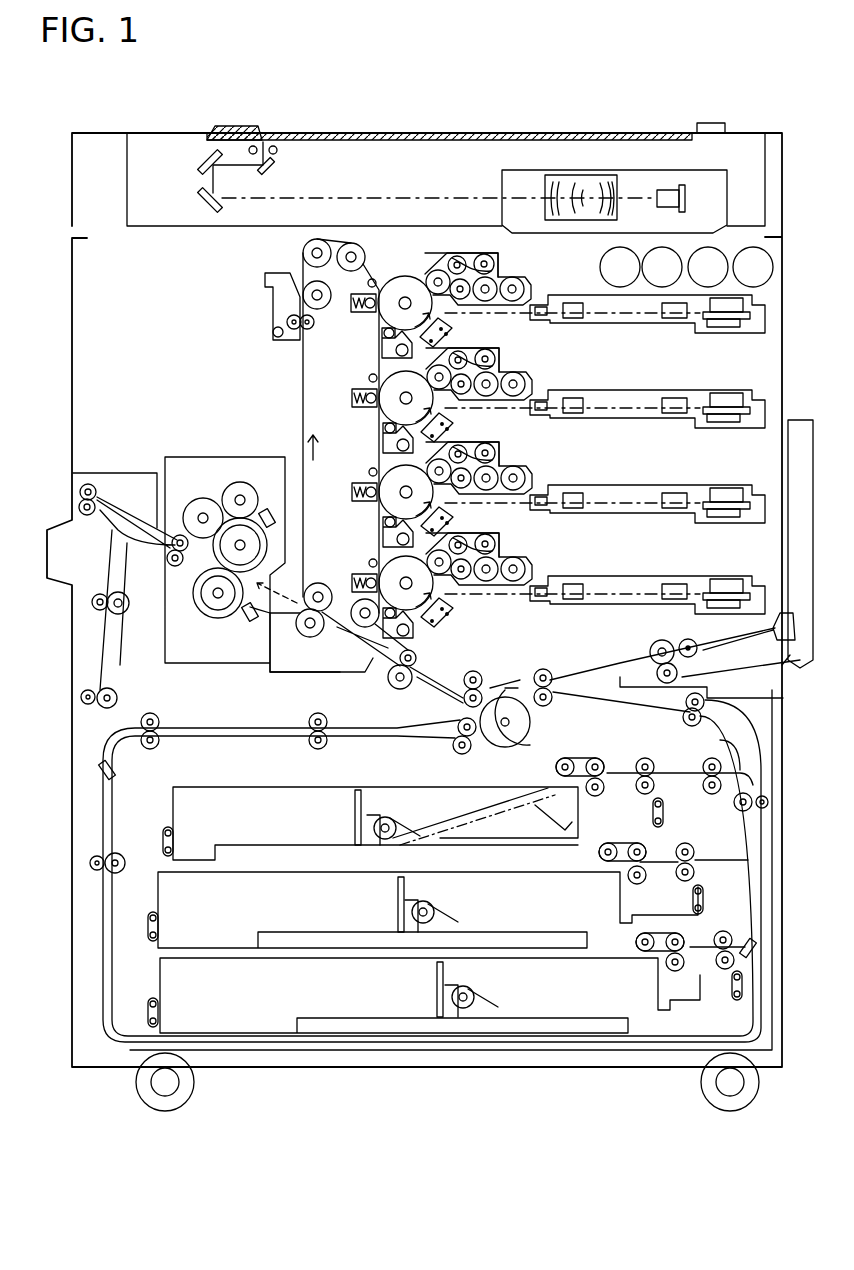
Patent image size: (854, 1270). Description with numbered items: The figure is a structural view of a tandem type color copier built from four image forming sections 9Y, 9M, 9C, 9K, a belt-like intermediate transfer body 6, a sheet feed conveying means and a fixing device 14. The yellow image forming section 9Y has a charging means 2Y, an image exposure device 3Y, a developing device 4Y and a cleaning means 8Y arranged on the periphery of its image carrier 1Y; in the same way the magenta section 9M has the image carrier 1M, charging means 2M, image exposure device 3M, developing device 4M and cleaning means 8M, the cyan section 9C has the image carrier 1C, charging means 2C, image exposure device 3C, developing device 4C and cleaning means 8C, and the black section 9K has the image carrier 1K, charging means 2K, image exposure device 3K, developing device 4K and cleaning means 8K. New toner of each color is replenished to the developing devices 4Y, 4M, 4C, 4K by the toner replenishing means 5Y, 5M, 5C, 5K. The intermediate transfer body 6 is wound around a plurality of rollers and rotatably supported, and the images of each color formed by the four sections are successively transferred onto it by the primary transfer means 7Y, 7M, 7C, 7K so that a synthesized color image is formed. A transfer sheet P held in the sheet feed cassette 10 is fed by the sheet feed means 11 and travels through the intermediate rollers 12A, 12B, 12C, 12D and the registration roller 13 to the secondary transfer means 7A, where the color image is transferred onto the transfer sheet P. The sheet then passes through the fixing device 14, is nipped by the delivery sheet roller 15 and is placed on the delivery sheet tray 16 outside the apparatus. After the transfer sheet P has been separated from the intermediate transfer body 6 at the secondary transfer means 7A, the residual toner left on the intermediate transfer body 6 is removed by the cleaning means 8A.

The image carrier 1Y is at (402, 288).
The image carrier 1M is at (376, 395).
The image carrier 1C is at (376, 489).
The image carrier 1K is at (389, 573).
The charging means 2Y is at (454, 332).
The charging means 2M is at (457, 424).
The charging means 2C is at (455, 518).
The charging means 2K is at (466, 611).
The image exposure device 3Y is at (661, 340).
The image exposure device 3M is at (652, 436).
The image exposure device 3C is at (732, 475).
The image exposure device 3K is at (671, 568).
The developing device 4Y is at (467, 275).
The developing device 4M is at (479, 360).
The developing device 4C is at (479, 453).
The developing device 4K is at (479, 544).
The toner replenishing means 5Y is at (620, 267).
The toner replenishing means 5M is at (662, 267).
The toner replenishing means 5C is at (708, 267).
The toner replenishing means 5K is at (753, 267).
The intermediate transfer body 6 is at (300, 386).
The primary transfer means 7Y is at (348, 314).
The primary transfer means 7M is at (353, 412).
The primary transfer means 7C is at (346, 500).
The primary transfer means 7K is at (345, 572).
The secondary transfer means 7A is at (305, 643).
The cleaning means 8Y is at (376, 345).
The cleaning means 8M is at (373, 440).
The cleaning means 8C is at (374, 529).
The cleaning means 8K is at (432, 625).
The cleaning means 8A is at (275, 308).
The image forming section 9Y is at (520, 265).
The image forming section 9M is at (532, 358).
The image forming section 9C is at (532, 455).
The image forming section 9K is at (532, 549).
The sheet feed cassette 10 is at (252, 785).
The sheet feed means 11 is at (595, 757).
The intermediate roller 12A is at (707, 756).
The intermediate roller 12B is at (684, 717).
The intermediate roller 12C is at (550, 702).
The intermediate roller 12D is at (477, 670).
The registration roller 13 is at (388, 684).
The fixing device 14 is at (197, 457).
The delivery sheet roller 15 is at (97, 492).
The delivery sheet tray 16 is at (65, 478).
The transfer sheet P is at (478, 803).